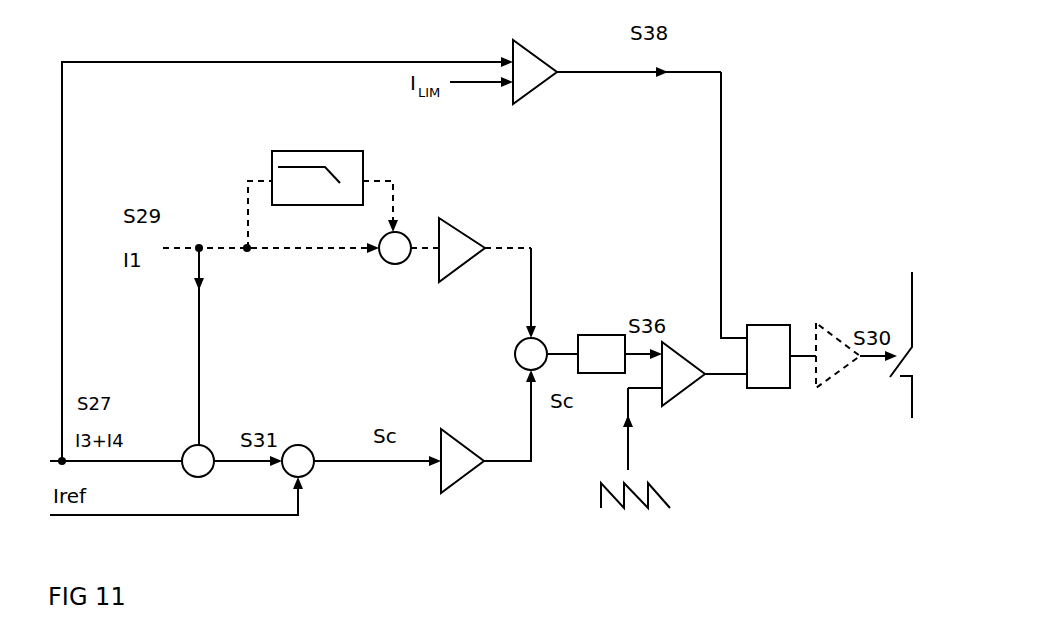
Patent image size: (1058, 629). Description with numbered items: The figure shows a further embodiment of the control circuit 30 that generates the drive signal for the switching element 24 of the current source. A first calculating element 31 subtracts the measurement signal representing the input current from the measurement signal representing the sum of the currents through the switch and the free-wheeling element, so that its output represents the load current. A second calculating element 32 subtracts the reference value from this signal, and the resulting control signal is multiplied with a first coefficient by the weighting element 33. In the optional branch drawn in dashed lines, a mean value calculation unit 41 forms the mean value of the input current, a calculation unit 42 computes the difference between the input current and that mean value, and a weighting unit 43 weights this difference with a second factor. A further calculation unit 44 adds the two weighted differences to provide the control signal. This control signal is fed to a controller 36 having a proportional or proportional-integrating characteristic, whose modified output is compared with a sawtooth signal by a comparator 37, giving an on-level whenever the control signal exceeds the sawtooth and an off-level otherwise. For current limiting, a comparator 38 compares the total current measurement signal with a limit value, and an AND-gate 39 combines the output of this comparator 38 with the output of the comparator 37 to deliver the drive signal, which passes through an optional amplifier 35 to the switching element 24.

The switching element 24 is at (887, 388).
The control circuit 30 is at (763, 83).
The first calculating element 31 is at (210, 448).
The second calculating element 32 is at (310, 448).
The weighting element 33 is at (450, 433).
The amplifier 35 is at (824, 330).
The controller 36 is at (600, 335).
The comparator 37 is at (680, 393).
The comparator 38 is at (518, 50).
The AND-gate 39 is at (757, 323).
The mean value calculation unit 41 is at (322, 150).
The calculation unit 42 is at (404, 234).
The weighting unit 43 is at (452, 226).
The calculation unit 44 is at (546, 336).